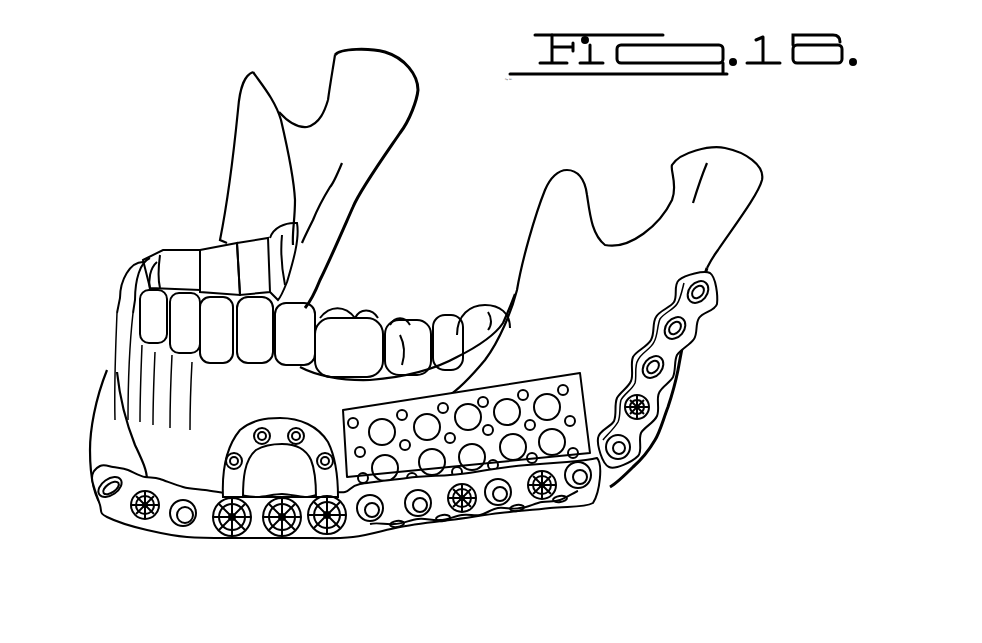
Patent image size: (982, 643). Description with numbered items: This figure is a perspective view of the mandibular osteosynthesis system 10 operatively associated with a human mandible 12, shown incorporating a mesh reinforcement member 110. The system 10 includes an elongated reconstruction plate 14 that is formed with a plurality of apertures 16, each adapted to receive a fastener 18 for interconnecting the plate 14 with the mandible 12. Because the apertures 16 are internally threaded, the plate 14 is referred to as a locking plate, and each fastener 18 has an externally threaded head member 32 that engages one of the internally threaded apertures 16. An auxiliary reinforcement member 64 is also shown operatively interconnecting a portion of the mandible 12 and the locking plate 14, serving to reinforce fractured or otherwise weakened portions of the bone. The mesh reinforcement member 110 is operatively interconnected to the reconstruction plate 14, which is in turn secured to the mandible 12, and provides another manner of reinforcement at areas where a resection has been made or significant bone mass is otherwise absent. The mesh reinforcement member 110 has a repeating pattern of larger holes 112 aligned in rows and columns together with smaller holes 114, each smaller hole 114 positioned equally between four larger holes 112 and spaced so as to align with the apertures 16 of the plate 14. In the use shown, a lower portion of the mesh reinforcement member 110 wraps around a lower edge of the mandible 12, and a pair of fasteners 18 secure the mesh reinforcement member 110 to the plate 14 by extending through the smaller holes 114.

The mandibular osteosynthesis system 10 is at (135, 543).
The mandible 12 is at (752, 218).
The reconstruction plate 14 is at (708, 322).
The apertures 16 is at (623, 447).
The fastener 18 is at (148, 484).
The head member 32 is at (331, 537).
The auxiliary reinforcement member 64 is at (279, 417).
The mesh reinforcement member 110 is at (520, 369).
The larger holes 112 is at (541, 392).
The smaller holes 114 is at (571, 418).